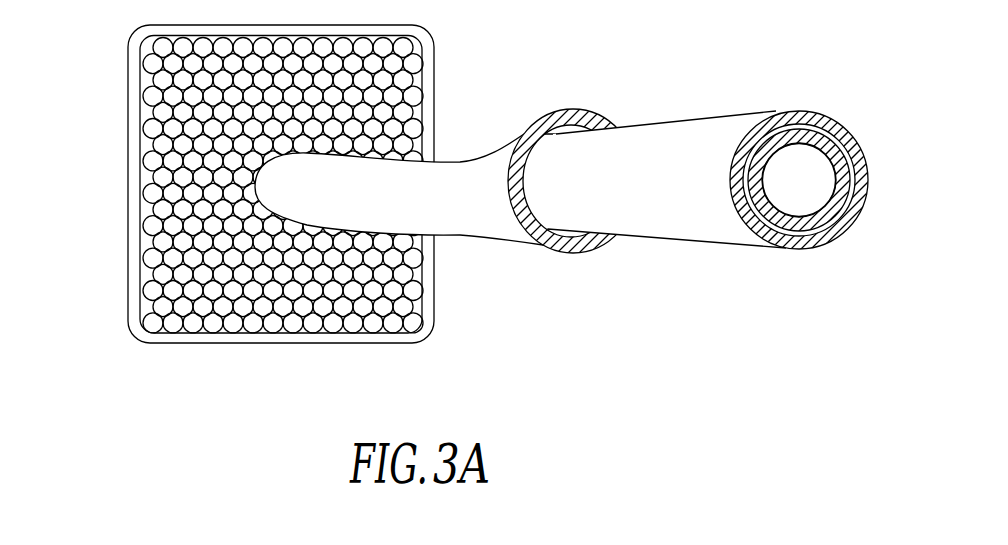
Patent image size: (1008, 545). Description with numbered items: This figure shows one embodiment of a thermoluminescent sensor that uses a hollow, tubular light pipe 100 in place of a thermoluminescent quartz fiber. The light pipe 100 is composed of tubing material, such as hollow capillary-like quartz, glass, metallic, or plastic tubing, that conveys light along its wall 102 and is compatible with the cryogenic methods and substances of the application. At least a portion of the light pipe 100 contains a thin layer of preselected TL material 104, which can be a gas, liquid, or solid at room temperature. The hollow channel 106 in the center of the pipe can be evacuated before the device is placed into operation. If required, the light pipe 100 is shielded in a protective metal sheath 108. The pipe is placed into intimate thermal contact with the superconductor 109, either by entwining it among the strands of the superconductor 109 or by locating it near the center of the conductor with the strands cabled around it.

The light pipe 100 is at (669, 137).
The wall 102 is at (815, 124).
The TL material 104 is at (850, 157).
The hollow channel 106 is at (790, 196).
The protective metal sheath 108 is at (563, 110).
The superconductor 109 is at (128, 154).